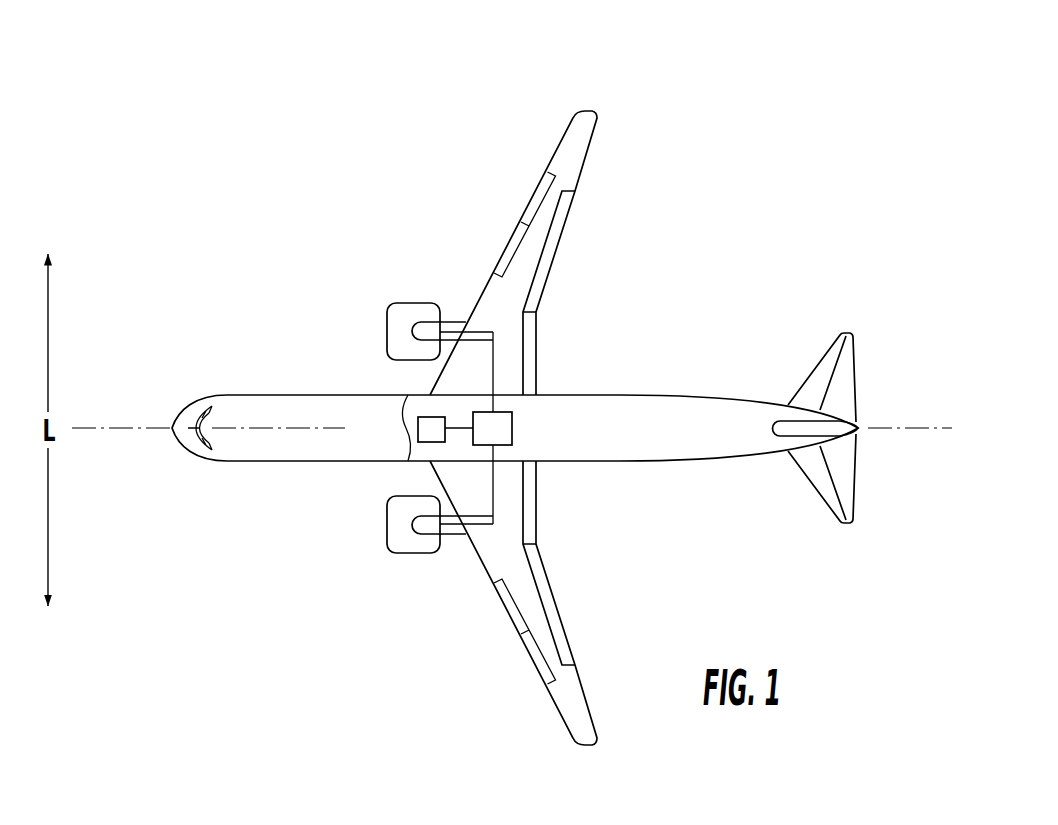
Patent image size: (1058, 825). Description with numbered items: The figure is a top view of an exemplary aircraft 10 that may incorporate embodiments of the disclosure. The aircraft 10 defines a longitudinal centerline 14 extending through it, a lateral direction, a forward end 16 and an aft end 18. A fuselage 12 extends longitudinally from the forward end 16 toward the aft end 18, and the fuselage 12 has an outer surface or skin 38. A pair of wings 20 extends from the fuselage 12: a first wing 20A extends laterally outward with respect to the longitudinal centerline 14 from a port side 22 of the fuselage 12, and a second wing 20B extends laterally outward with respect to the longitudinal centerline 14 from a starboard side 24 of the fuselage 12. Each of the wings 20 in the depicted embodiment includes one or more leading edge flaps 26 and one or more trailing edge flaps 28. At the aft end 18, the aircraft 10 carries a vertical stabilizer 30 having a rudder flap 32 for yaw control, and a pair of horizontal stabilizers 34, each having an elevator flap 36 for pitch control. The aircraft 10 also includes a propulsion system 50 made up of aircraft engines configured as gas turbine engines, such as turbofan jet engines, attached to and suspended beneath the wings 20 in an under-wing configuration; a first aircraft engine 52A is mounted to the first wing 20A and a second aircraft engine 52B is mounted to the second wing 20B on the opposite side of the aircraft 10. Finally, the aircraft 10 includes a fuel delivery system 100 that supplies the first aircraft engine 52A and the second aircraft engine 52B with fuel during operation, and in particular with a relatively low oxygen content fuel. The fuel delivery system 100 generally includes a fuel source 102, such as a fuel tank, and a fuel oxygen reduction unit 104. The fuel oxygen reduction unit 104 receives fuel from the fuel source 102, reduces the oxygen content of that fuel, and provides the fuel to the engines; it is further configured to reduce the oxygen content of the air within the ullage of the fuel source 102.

The aircraft 10 is at (712, 210).
The fuselage 12 is at (225, 452).
The longitudinal centerline 14 is at (94, 433).
The forward end 16 is at (171, 449).
The aft end 18 is at (812, 513).
The wings 20 is at (494, 128).
The first wing 20A is at (540, 648).
The second wing 20B is at (577, 137).
The port side 22 is at (302, 478).
The starboard side 24 is at (305, 392).
The leading edge flaps 26 is at (503, 610).
The trailing edge flaps 28 is at (560, 617).
The vertical stabilizer 30 is at (788, 425).
The rudder flap 32 is at (849, 425).
The horizontal stabilizers 34 is at (827, 357).
The elevator flap 36 is at (846, 357).
The outer surface or skin 38 is at (665, 447).
The propulsion system 50 is at (364, 288).
The first aircraft engine 52A is at (398, 557).
The second aircraft engine 52B is at (405, 300).
The fuel delivery system 100 is at (506, 360).
The fuel source 102 is at (426, 444).
The fuel oxygen reduction unit 104 is at (512, 424).